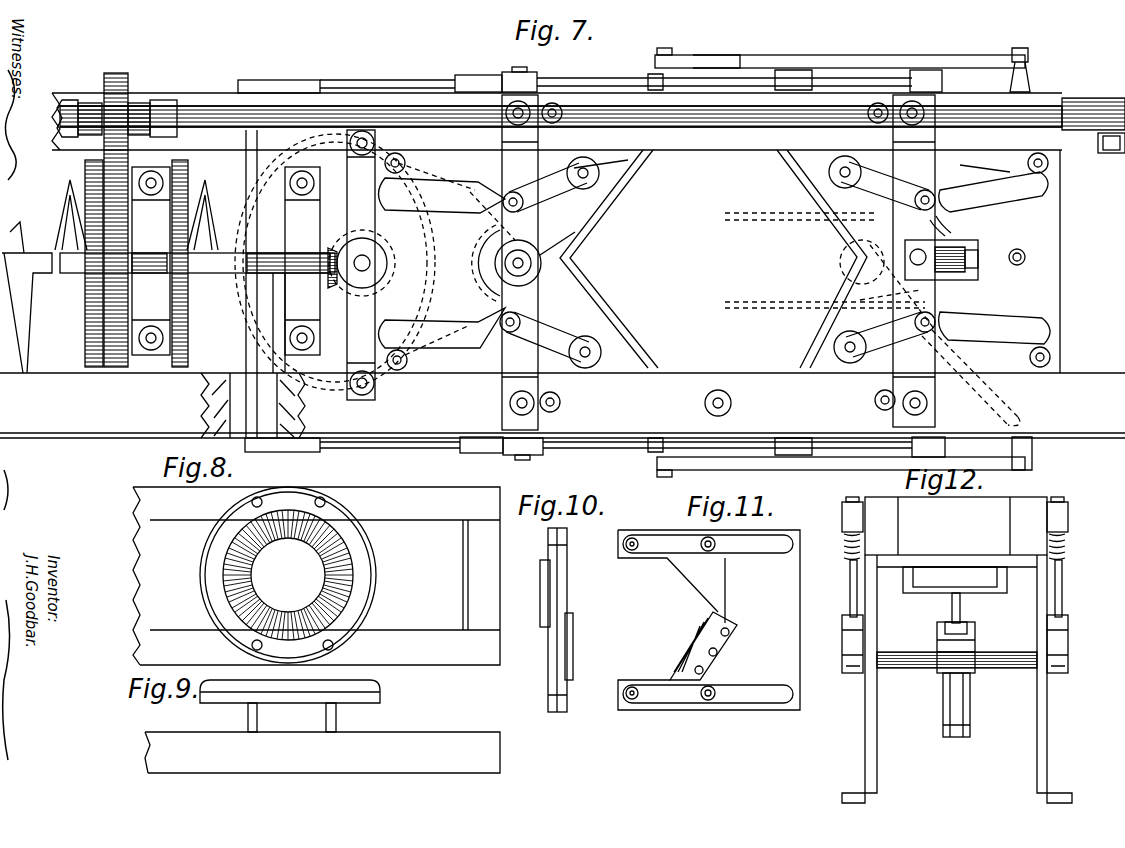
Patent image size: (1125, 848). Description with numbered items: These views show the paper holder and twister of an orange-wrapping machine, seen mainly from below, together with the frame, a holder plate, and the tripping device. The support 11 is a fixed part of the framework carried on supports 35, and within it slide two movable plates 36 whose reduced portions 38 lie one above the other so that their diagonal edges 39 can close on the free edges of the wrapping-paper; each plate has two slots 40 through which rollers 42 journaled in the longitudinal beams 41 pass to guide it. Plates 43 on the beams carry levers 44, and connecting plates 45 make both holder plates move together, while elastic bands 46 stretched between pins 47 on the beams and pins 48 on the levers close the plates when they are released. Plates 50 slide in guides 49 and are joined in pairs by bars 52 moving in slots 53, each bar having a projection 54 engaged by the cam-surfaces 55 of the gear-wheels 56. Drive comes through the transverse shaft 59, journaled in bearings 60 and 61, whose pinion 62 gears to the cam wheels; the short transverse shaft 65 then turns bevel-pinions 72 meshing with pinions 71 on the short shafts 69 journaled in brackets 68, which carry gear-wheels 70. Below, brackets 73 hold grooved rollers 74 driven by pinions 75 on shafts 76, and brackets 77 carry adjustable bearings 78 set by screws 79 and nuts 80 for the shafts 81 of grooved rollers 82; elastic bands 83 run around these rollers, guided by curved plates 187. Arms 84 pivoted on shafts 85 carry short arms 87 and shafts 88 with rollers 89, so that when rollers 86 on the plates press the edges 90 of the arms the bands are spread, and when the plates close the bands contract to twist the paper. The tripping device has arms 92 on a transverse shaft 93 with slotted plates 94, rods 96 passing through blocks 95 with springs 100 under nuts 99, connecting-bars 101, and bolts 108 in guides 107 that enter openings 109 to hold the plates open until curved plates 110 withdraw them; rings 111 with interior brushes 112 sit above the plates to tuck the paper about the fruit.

In FIG. 7, the support 11 is at (562, 265).
In FIG. 8, the support 11 is at (434, 492).
In FIG. 9, the support 11 is at (412, 736).
In FIG. 12, the support 11 is at (996, 497).
In FIG. 12, the supports 35 is at (866, 690).
In FIG. 7, the movable plates 36 is at (802, 185).
In FIG. 8, the movable plates 36 is at (296, 580).
In FIG. 10, the movable plates 36 is at (574, 613).
In FIG. 11, the movable plates 36 is at (709, 620).
In FIG. 10, the reduced portion 38 is at (567, 550).
In FIG. 11, the reduced portion 38 is at (683, 576).
In FIG. 7, the diagonal edges 39 is at (612, 225).
In FIG. 11, the slots 40 is at (768, 535).
In FIG. 7, the longitudinal beams 41 is at (668, 373).
In FIG. 7, the rollers 42 is at (732, 403).
In FIG. 11, the rollers 42 is at (634, 538).
In FIG. 7, the plates 43 is at (715, 68).
In FIG. 7, the levers 44 is at (760, 60).
In FIG. 7, the connecting plates 45 is at (580, 78).
In FIG. 7, the elastic bands 46 is at (922, 70).
In FIG. 7, the pins 47 is at (1030, 72).
In FIG. 7, the pins 48 is at (662, 257).
In FIG. 7, the guides 49 is at (296, 80).
In FIG. 7, the plates 50 is at (390, 261).
In FIG. 7, the bars 52 is at (26, 305).
In FIG. 7, the slots 53 is at (253, 397).
In FIG. 7, the projection 54 is at (245, 270).
In FIG. 7, the cam-surfaces 55 is at (215, 200).
In FIG. 7, the gear-wheels 56 is at (190, 176).
In FIG. 7, the transverse shaft 59 is at (232, 105).
In FIG. 7, the bearing 60 is at (1088, 98).
In FIG. 7, the bearing 61 is at (88, 103).
In FIG. 7, the pinion 62 is at (130, 68).
In FIG. 7, the short transverse shaft 65 is at (262, 249).
In FIG. 7, the brackets 68 is at (365, 238).
In FIG. 7, the short shafts 69 is at (378, 278).
In FIG. 7, the gear-wheels 70 is at (410, 150).
In FIG. 7, the bevel-pinions 71 is at (386, 262).
In FIG. 7, the bevel-pinions 72 is at (346, 250).
In FIG. 7, the brackets 73 is at (504, 167).
In FIG. 7, the grooved rollers 74 is at (540, 282).
In FIG. 7, the pinions 75 is at (562, 240).
In FIG. 7, the shafts 76 is at (482, 263).
In FIG. 7, the brackets 77 is at (935, 159).
In FIG. 7, the adjustable bearings 78 is at (940, 245).
In FIG. 7, the screws 79 is at (975, 252).
In FIG. 7, the nuts 80 is at (980, 275).
In FIG. 7, the shafts 81 is at (897, 287).
In FIG. 7, the grooved rollers 82 is at (845, 250).
In FIG. 7, the bands 83 is at (748, 124).
In FIG. 7, the arms 84 is at (440, 205).
In FIG. 7, the shafts 85 is at (492, 210).
In FIG. 7, the rollers 86 is at (396, 153).
In FIG. 7, the short arms 87 is at (525, 185).
In FIG. 7, the shafts 88 is at (588, 160).
In FIG. 7, the rollers 89 is at (636, 168).
In FIG. 7, the edges 90 is at (701, 263).
In FIG. 12, the arms 92 is at (968, 710).
In FIG. 12, the transverse shaft 93 is at (906, 652).
In FIG. 12, the slotted plates 94 is at (846, 643).
In FIG. 12, the blocks 95 is at (842, 516).
In FIG. 12, the rods 96 is at (850, 580).
In FIG. 7, the nuts 99 is at (985, 160).
In FIG. 12, the springs 100 is at (844, 549).
In FIG. 12, the connecting-bars 101 is at (953, 695).
In FIG. 12, the guides 107 is at (1003, 592).
In FIG. 12, the bolts 108 is at (952, 605).
In FIG. 7, the openings 109 is at (1030, 252).
In FIG. 12, the curved plates 110 is at (972, 640).
In FIG. 8, the rings 111 is at (302, 492).
In FIG. 9, the rings 111 is at (378, 690).
In FIG. 8, the brushes 112 is at (306, 538).
In FIG. 7, the curved plates 187 is at (709, 261).